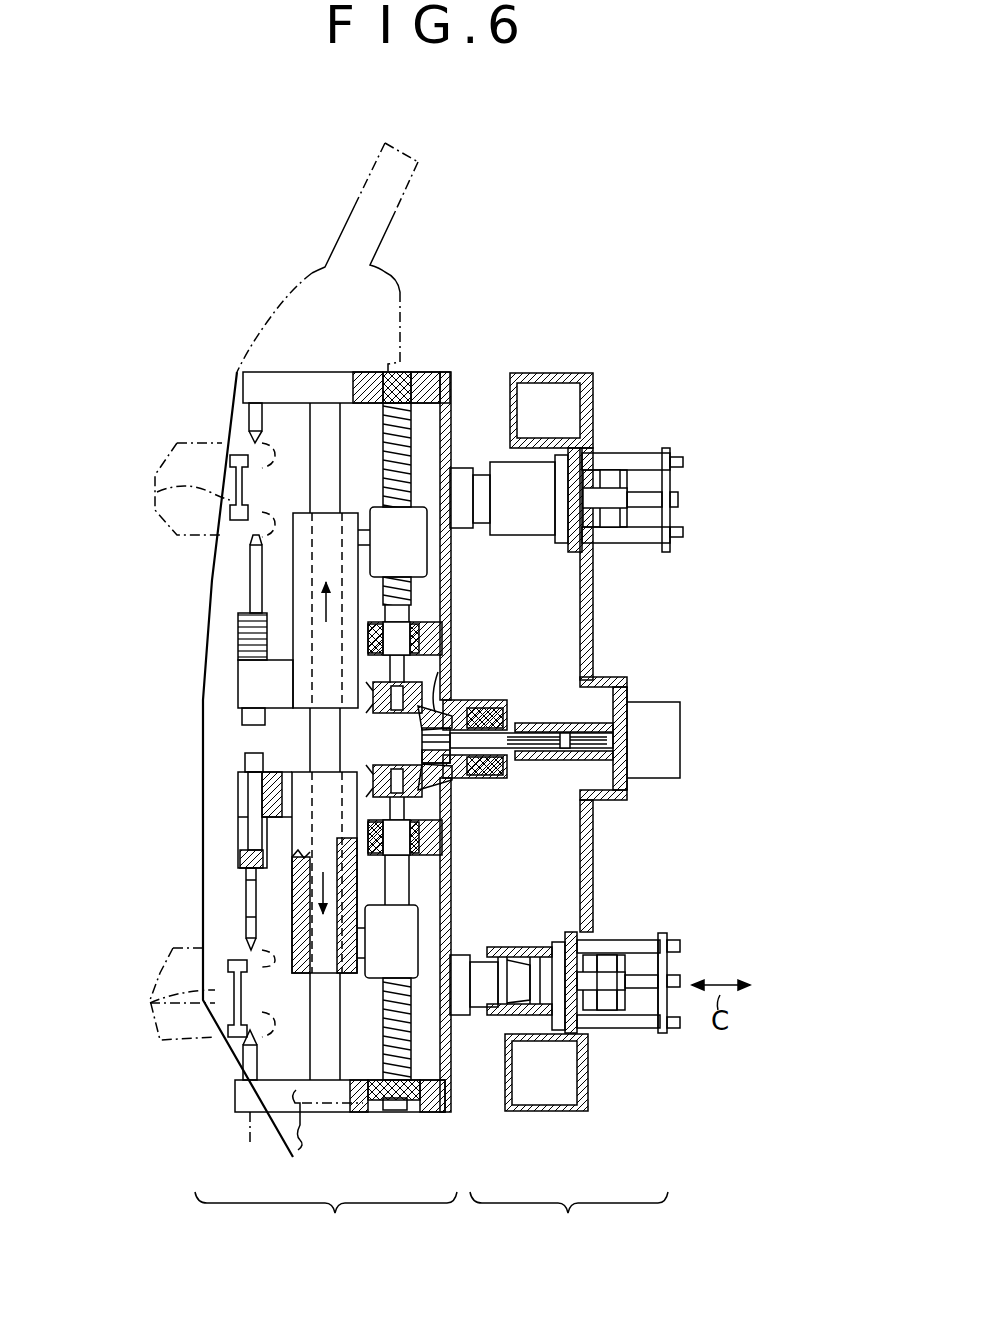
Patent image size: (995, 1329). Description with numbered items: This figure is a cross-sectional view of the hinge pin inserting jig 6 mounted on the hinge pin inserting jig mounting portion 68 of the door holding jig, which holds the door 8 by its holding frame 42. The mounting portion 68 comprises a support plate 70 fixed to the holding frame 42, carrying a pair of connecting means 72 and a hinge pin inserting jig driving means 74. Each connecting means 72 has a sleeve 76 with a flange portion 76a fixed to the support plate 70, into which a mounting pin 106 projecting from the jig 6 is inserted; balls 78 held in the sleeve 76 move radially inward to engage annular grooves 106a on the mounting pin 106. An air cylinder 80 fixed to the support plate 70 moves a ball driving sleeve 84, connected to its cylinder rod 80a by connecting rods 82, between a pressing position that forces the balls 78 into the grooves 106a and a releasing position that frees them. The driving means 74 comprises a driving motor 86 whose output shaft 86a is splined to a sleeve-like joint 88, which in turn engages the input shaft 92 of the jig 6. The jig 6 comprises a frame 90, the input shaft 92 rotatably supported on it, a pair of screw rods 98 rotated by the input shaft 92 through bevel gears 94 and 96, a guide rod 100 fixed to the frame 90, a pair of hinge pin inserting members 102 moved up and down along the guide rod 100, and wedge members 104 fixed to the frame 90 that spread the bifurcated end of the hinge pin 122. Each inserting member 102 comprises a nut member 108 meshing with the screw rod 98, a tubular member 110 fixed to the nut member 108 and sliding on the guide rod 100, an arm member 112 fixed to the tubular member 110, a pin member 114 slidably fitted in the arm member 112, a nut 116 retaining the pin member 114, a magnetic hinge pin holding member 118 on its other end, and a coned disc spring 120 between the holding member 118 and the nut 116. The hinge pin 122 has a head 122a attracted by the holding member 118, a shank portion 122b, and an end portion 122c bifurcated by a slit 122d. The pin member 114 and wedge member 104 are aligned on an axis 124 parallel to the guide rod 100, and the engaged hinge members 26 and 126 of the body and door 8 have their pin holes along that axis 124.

The hinge pin inserting jig 6 is at (326, 1224).
The door 8 is at (345, 235).
The hinge member 26 is at (165, 537).
The holding frame 42 is at (557, 373).
The hinge pin inserting jig mounting portion 68 is at (569, 1224).
The support plate 70 is at (597, 592).
The connecting means 72 is at (619, 440).
The hinge pin inserting jig driving means 74 is at (652, 690).
The sleeve 76 is at (482, 534).
The flange portion 76a is at (607, 930).
The balls 78 is at (475, 1018).
The air cylinder 80 is at (632, 1007).
The cylinder rod 80a is at (655, 1000).
The connecting rods 82 is at (640, 940).
The ball driving sleeve 84 is at (533, 535).
The driving motor 86 is at (682, 716).
The output shaft 86a is at (613, 795).
The joint 88 is at (550, 723).
The frame 90 is at (298, 372).
The input shaft 92 is at (527, 752).
The bevel gear 94 is at (440, 698).
The bevel gear 96 is at (447, 655).
The screw rod 98 is at (446, 432).
The guide rod 100 is at (310, 423).
The hinge pin inserting member 102 is at (228, 676).
The wedge member 104 is at (240, 425).
The mounting pin 106 is at (480, 972).
The annular grooves 106a is at (537, 985).
The nut member 108 is at (450, 887).
The tubular member 110 is at (300, 762).
The arm member 112 is at (243, 778).
The pin member 114 is at (262, 797).
The nut 116 is at (255, 753).
The hinge pin holding member 118 is at (243, 858).
The coned disc spring 120 is at (243, 830).
The hinge pin 122 is at (244, 576).
The head 122a is at (245, 882).
The shank portion 122b is at (240, 917).
The end portion 122c is at (200, 975).
The slit 122d is at (185, 1000).
The axis 124 is at (245, 352).
The hinge member 126 is at (153, 502).